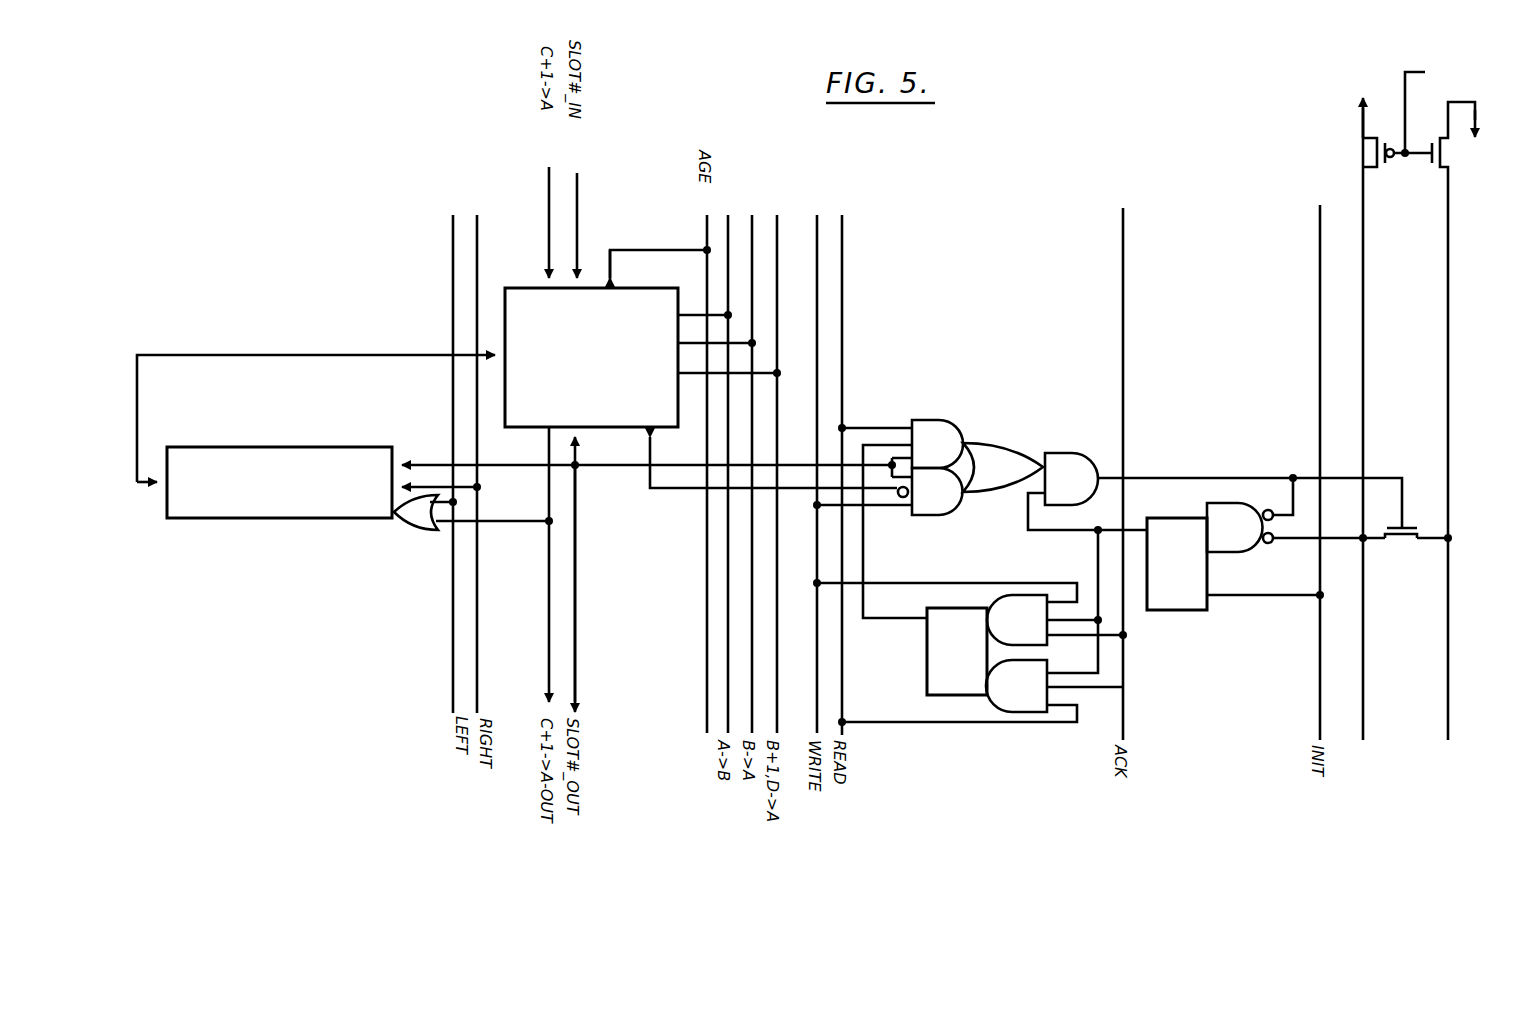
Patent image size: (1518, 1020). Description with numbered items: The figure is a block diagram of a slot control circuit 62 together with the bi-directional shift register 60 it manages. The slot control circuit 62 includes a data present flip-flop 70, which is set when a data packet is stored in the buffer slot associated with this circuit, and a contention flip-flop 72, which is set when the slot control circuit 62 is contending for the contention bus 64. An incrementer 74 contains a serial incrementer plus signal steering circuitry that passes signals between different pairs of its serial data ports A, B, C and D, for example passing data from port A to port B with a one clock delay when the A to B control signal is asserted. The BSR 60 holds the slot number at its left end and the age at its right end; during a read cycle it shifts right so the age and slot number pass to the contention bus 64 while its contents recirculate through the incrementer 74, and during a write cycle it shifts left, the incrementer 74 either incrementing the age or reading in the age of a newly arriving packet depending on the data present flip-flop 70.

The bi-directional shift register 60 is at (195, 518).
The slot control circuit 62 is at (1130, 431).
The contention bus pair 64 is at (1448, 330).
The data present flip-flop 70 is at (927, 653).
The contention flip-flop 72 is at (1170, 610).
The incrementer 74 is at (522, 288).